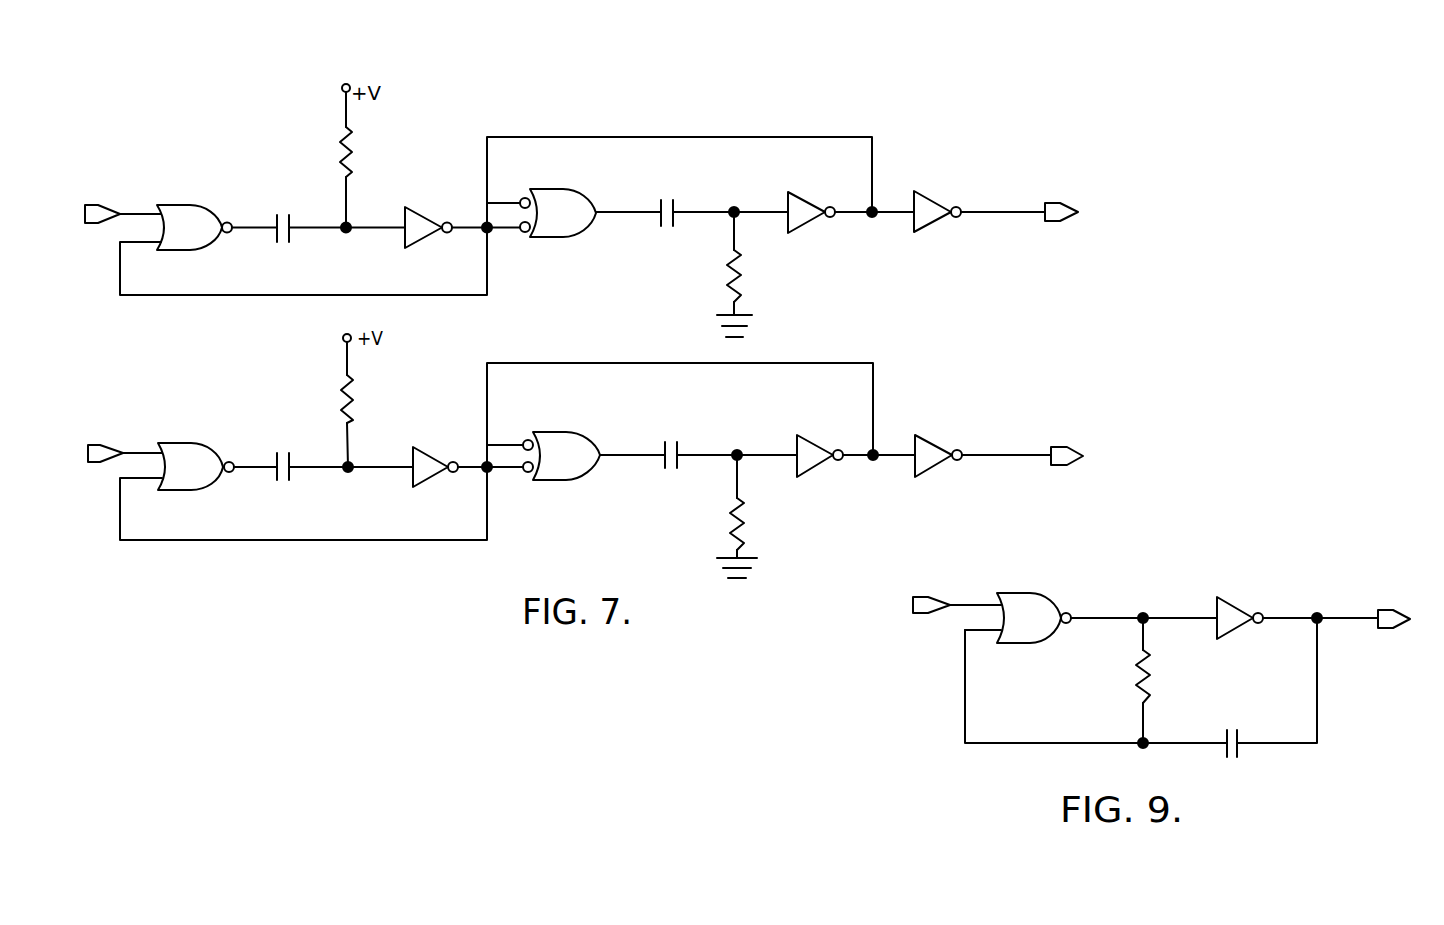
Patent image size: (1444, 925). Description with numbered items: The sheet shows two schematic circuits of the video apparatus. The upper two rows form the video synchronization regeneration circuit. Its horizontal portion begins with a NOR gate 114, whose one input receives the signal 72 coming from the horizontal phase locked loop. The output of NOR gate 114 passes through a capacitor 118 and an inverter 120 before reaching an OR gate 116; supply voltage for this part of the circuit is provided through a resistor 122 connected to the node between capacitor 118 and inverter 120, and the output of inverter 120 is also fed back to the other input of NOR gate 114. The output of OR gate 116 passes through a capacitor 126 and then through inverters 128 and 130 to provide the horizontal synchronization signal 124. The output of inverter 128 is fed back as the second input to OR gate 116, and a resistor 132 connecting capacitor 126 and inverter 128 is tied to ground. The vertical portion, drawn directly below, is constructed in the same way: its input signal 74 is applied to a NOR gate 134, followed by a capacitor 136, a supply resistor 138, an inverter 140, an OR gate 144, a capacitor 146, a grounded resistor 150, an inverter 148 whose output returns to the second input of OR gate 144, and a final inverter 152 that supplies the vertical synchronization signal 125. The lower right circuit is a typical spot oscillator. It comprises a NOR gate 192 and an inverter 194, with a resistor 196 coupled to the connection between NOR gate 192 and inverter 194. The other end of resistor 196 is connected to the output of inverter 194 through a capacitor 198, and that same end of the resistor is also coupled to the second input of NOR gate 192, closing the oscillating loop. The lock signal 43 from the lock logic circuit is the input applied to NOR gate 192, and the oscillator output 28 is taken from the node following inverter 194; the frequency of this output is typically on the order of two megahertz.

In FIG. 7, the signal 72 is at (130, 197).
In FIG. 7, the NOR gate 114 is at (197, 207).
In FIG. 7, the capacitor 118 is at (282, 220).
In FIG. 7, the resistor 122 is at (363, 136).
In FIG. 7, the inverter 120 is at (426, 215).
In FIG. 7, the OR gate 116 is at (577, 197).
In FIG. 7, the capacitor 126 is at (671, 201).
In FIG. 7, the resistor 132 is at (741, 277).
In FIG. 7, the inverter 128 is at (806, 198).
In FIG. 7, the inverter 130 is at (929, 198).
In FIG. 7, the horizontal synchronization signal 124 is at (1000, 210).
In FIG. 7, the input signal line 74 is at (127, 453).
In FIG. 7, the NOR gate 134 is at (221, 442).
In FIG. 7, the capacitor 136 is at (284, 460).
In FIG. 7, the resistor 138 is at (354, 396).
In FIG. 7, the inverter 140 is at (432, 453).
In FIG. 7, the OR gate 144 is at (571, 431).
In FIG. 7, the capacitor 146 is at (672, 446).
In FIG. 7, the resistor 150 is at (743, 525).
In FIG. 7, the inverter 148 is at (806, 439).
In FIG. 7, the inverter 152 is at (931, 441).
In FIG. 7, the vertical synchronization signal 125 is at (1002, 454).
In FIG. 9, the lock signal 43 is at (967, 604).
In FIG. 9, the NOR gate 192 is at (1046, 603).
In FIG. 9, the resistor 196 is at (1148, 686).
In FIG. 9, the capacitor 198 is at (1233, 733).
In FIG. 9, the inverter 194 is at (1239, 604).
In FIG. 9, the output signal line 28 is at (1343, 616).